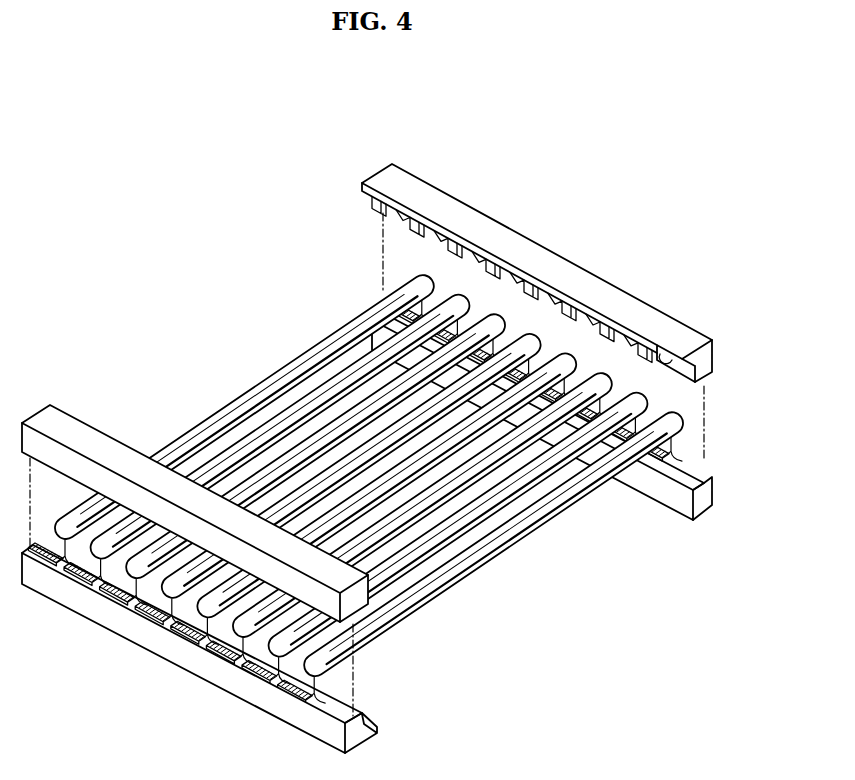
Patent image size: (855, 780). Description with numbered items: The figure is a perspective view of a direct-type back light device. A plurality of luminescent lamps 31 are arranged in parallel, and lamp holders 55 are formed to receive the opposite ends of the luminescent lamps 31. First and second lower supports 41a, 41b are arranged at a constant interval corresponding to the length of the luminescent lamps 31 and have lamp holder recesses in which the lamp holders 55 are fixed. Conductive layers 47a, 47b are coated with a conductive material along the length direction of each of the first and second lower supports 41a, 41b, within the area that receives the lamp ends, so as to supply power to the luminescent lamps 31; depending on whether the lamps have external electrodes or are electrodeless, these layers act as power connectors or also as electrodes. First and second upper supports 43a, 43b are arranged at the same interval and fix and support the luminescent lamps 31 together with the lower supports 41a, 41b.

The luminescent lamps 31 is at (283, 376).
The first lower support 41a is at (183, 652).
The second lower support 41b is at (687, 500).
The first upper support 43a is at (117, 450).
The second upper support 43b is at (542, 257).
The conductive layer 47a is at (365, 720).
The conductive layer 47b is at (707, 462).
The lamp holders 55 is at (663, 337).